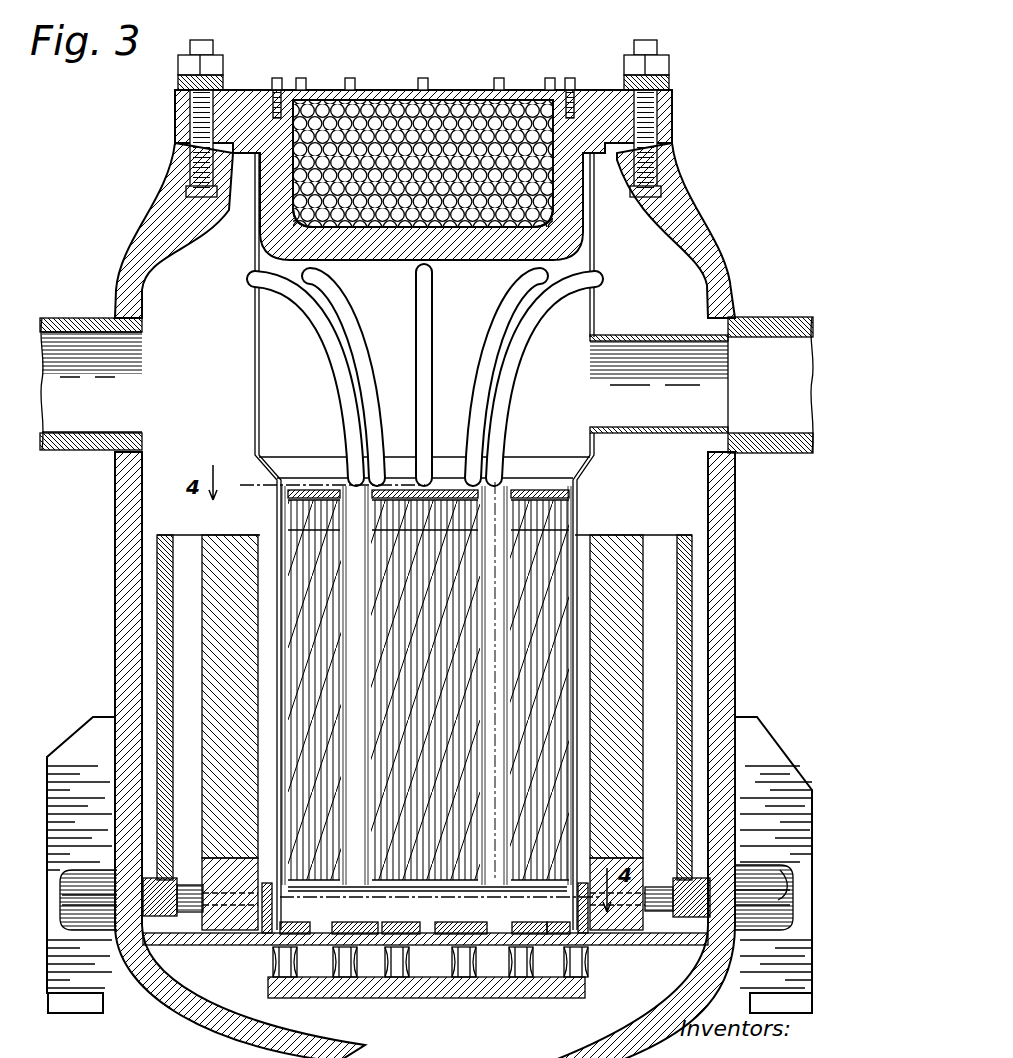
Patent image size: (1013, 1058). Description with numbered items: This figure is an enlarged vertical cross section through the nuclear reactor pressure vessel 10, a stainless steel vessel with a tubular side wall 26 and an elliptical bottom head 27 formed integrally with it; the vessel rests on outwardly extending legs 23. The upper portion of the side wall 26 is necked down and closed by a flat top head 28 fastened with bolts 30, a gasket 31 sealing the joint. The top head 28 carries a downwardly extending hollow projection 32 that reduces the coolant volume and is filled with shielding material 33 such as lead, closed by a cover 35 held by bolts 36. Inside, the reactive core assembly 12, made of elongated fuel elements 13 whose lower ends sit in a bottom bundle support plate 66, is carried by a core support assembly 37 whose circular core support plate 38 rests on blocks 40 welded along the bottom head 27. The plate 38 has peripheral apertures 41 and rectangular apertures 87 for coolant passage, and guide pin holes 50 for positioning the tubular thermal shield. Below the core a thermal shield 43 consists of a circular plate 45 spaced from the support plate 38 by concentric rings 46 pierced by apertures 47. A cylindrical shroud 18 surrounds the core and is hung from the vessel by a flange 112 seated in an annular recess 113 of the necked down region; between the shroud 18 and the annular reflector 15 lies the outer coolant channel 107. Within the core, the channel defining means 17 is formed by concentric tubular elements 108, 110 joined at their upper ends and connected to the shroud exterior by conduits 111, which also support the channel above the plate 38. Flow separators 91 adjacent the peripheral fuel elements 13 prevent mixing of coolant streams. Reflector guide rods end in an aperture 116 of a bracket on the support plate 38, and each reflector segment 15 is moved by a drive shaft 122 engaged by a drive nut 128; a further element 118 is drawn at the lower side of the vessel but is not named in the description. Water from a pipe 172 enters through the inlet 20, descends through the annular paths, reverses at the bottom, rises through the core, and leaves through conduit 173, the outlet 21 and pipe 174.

The pressure vessel 10 is at (102, 525).
The reactive core assembly 12 is at (292, 602).
The fuel elements 13 is at (290, 660).
The reflector 15 is at (622, 535).
The annular coolant channel defining means 17 is at (350, 490).
The shroud 18 is at (277, 520).
The inlet 20 is at (60, 332).
The outlet 21 is at (760, 340).
The legs 23 is at (88, 748).
The side wall 26 is at (115, 503).
The bottom head 27 is at (190, 1028).
The top head 28 is at (245, 98).
The bolts 30 is at (206, 42).
The gasket 31 is at (178, 143).
The hollow projection 32 is at (598, 200).
The shielding material 33 is at (388, 240).
The cover 35 is at (384, 96).
The bolts 36 is at (568, 78).
The core support assembly 37 is at (443, 994).
The core support plate 38 is at (640, 946).
The blocks 40 is at (150, 990).
The apertures 41 is at (336, 998).
The thermal shield 43 is at (373, 1005).
The circular plate 45 is at (441, 998).
The concentric rings 46 is at (520, 998).
The apertures 47 is at (574, 960).
The guide pin holes 50 is at (180, 940).
The bottom bundle support plate 66 is at (366, 934).
The rectangular apertures 87 is at (300, 998).
The flow separators 91 is at (282, 724).
The coolant channel 107 is at (268, 821).
The tubular element 108 is at (352, 623).
The tubular element 110 is at (368, 640).
The conduits 111 is at (306, 332).
The flange 112 is at (277, 90).
The annular recess 113 is at (228, 214).
The aperture 116 is at (585, 905).
The lug 118 is at (112, 958).
The drive shaft 122 is at (660, 888).
The drive nut 128 is at (764, 868).
The pipe 172 is at (60, 450).
The conduit 173 is at (655, 335).
The pipe 174 is at (795, 455).